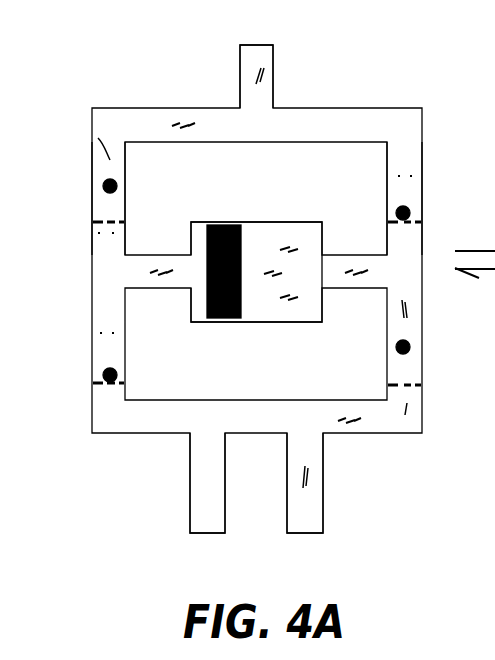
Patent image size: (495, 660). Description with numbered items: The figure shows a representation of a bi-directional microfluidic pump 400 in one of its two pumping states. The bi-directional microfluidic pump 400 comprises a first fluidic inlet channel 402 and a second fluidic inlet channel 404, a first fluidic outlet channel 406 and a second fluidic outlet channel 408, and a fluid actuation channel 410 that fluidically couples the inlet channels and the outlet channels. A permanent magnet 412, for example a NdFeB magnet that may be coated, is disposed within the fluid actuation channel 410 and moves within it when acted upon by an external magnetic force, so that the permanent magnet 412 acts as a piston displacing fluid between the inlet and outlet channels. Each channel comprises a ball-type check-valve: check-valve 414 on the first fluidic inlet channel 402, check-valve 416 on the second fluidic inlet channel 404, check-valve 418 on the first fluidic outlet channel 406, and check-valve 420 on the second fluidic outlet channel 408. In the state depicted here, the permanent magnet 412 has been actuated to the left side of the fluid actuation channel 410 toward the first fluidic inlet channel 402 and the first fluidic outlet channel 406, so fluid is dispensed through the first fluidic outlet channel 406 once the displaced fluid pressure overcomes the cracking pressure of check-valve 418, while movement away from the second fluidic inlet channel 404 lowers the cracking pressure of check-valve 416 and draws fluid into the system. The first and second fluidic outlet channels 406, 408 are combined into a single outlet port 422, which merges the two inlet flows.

The bi-directional microfluidic pump 400 is at (133, 52).
The first fluidic inlet channel 402 is at (190, 493).
The second fluidic inlet channel 404 is at (323, 493).
The first fluidic outlet channel 406 is at (93, 136).
The second fluidic outlet channel 408 is at (400, 160).
The fluid actuation channel 410 is at (280, 232).
The permanent magnet 412 is at (241, 320).
The check-valve 414 is at (93, 360).
The check-valve 416 is at (423, 331).
The check-valve 418 is at (93, 174).
The check-valve 420 is at (423, 200).
The single outlet port 422 is at (276, 49).